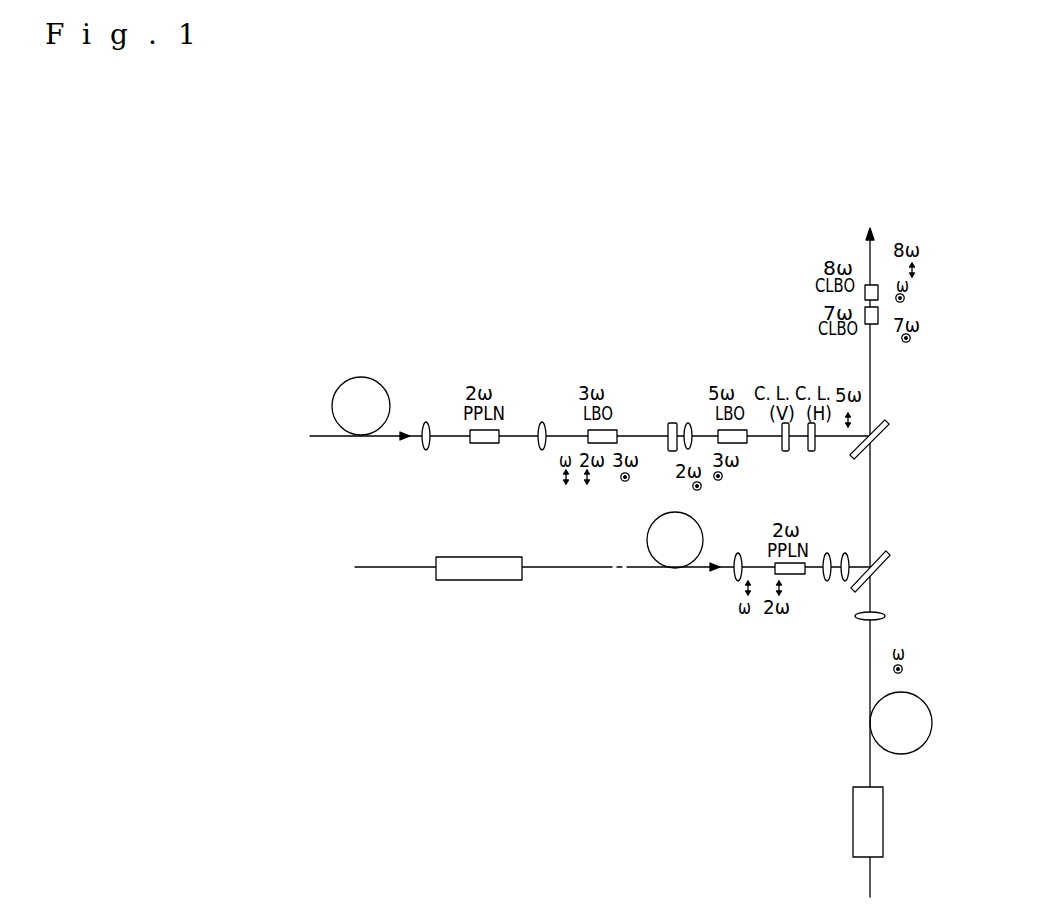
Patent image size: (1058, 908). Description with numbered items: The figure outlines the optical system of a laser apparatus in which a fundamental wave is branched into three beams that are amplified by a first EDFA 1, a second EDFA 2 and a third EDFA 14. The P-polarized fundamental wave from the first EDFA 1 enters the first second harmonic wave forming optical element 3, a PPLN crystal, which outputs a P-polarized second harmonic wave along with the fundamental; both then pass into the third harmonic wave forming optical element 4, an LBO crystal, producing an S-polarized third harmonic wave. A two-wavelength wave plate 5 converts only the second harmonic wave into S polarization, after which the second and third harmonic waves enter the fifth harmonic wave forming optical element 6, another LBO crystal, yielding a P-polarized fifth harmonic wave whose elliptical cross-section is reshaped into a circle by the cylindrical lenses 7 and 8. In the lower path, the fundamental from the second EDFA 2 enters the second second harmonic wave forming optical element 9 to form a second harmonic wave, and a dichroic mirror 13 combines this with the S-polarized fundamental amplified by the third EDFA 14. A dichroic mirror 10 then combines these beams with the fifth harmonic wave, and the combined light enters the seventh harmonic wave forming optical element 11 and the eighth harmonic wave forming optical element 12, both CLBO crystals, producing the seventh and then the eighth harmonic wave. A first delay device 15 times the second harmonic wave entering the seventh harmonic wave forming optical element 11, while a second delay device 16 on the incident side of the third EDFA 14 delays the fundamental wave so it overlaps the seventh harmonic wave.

The first EDFA 1 is at (381, 386).
The second EDFA 2 is at (652, 521).
The first second harmonic wave forming optical element 3 is at (489, 444).
The third harmonic wave forming optical element 4 is at (588, 433).
The 2-wavelength wave plate 5 is at (673, 452).
The fifth harmonic wave forming optical element 6 is at (718, 433).
The cylindrical lens 7 is at (785, 452).
The cylindrical lens 8 is at (811, 452).
The second second harmonic wave forming optical element 9 is at (795, 575).
The dichroic mirror 10 is at (888, 430).
The seventh harmonic wave forming optical element 11 is at (878, 318).
The eighth harmonic wave forming optical element 12 is at (865, 288).
The dichroic mirror 13 is at (875, 573).
The third EDFA 14 is at (927, 745).
The first delay device 15 is at (497, 557).
The second delay device 16 is at (883, 828).